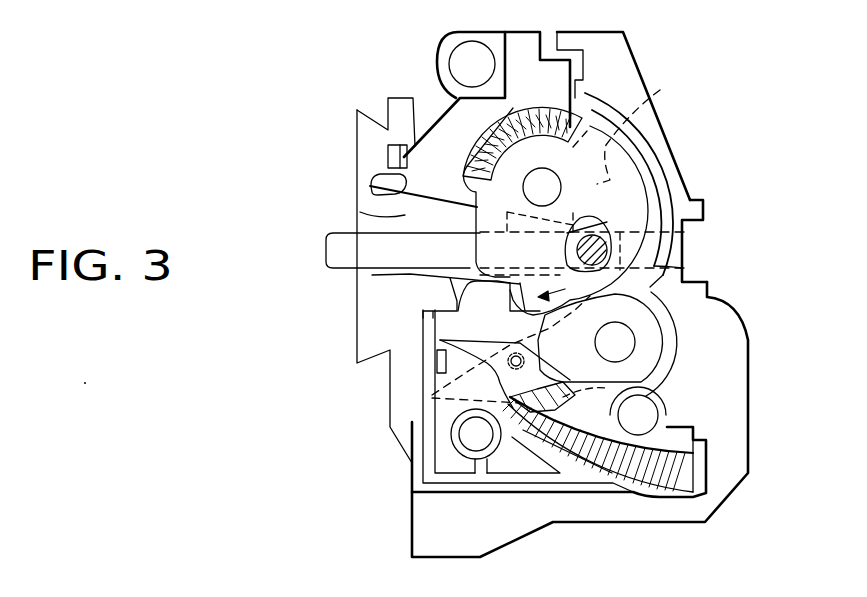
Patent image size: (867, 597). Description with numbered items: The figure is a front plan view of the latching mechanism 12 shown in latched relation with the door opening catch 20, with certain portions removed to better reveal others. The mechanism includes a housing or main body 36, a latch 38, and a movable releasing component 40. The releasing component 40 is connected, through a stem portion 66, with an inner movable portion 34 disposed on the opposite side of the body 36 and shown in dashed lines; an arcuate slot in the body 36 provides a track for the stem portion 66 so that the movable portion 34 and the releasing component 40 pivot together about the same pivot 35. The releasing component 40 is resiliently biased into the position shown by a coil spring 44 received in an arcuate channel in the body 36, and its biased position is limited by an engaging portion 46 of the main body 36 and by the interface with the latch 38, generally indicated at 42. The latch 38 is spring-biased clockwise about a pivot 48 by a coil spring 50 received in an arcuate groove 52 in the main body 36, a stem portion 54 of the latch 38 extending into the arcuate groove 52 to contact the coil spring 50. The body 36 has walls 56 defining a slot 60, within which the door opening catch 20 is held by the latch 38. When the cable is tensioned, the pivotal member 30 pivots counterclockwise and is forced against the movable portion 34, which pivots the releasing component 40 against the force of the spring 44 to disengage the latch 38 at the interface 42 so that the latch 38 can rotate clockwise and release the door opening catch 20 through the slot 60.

The latching mechanism 12 is at (756, 106).
The door opening catch 20 is at (373, 248).
The pivotal member 30 is at (437, 365).
The inner movable portion 34 is at (432, 398).
The pivot 35 is at (620, 342).
The housing or main body 36 is at (692, 208).
The latch 38 is at (623, 189).
The movable releasing component 40 is at (487, 300).
The interface 42 is at (640, 288).
The coil spring 44 is at (637, 480).
The engaging portion 46 is at (445, 300).
The pivot 48 is at (530, 186).
The coil spring 50 is at (530, 127).
The arcuate groove 52 is at (653, 100).
The stem portion 54 is at (562, 132).
The walls 56 is at (372, 190).
The slot 60 is at (360, 212).
The stem portion 66 is at (524, 358).